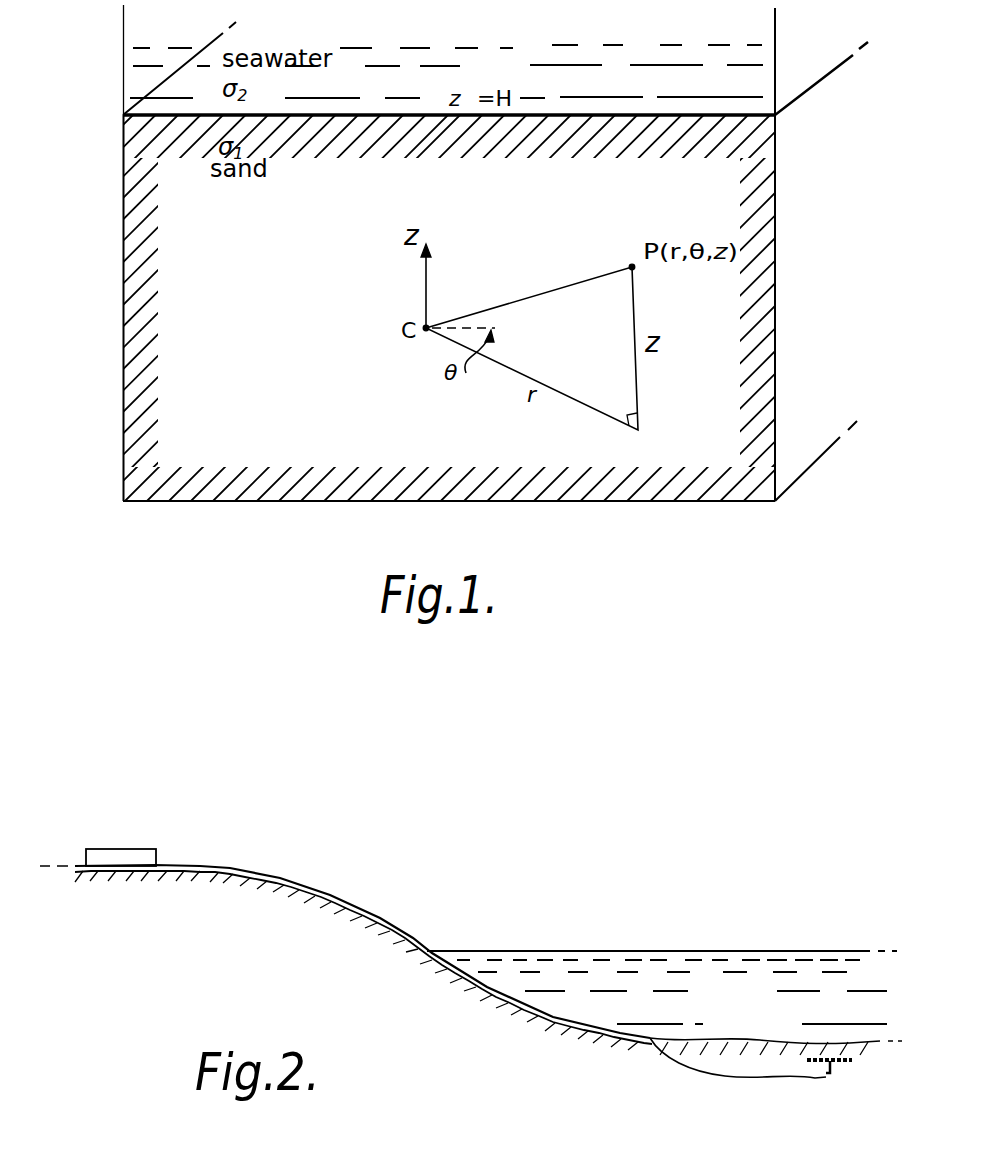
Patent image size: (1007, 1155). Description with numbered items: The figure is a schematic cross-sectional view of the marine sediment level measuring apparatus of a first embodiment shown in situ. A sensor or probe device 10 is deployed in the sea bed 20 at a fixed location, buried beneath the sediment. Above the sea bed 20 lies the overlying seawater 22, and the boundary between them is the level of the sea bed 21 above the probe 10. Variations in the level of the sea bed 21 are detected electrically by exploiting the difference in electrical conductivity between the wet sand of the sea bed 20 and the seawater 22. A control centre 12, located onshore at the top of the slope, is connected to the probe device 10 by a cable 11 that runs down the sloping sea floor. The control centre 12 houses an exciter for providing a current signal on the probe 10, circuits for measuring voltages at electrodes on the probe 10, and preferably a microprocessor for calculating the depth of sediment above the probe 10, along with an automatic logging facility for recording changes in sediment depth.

The sensor or probe device 10 is at (840, 1064).
The cable 11 is at (387, 922).
The control centre 12 is at (121, 857).
The sea bed 20 is at (612, 1088).
The level of the sea bed 21 is at (748, 1040).
The seawater 22 is at (755, 1005).